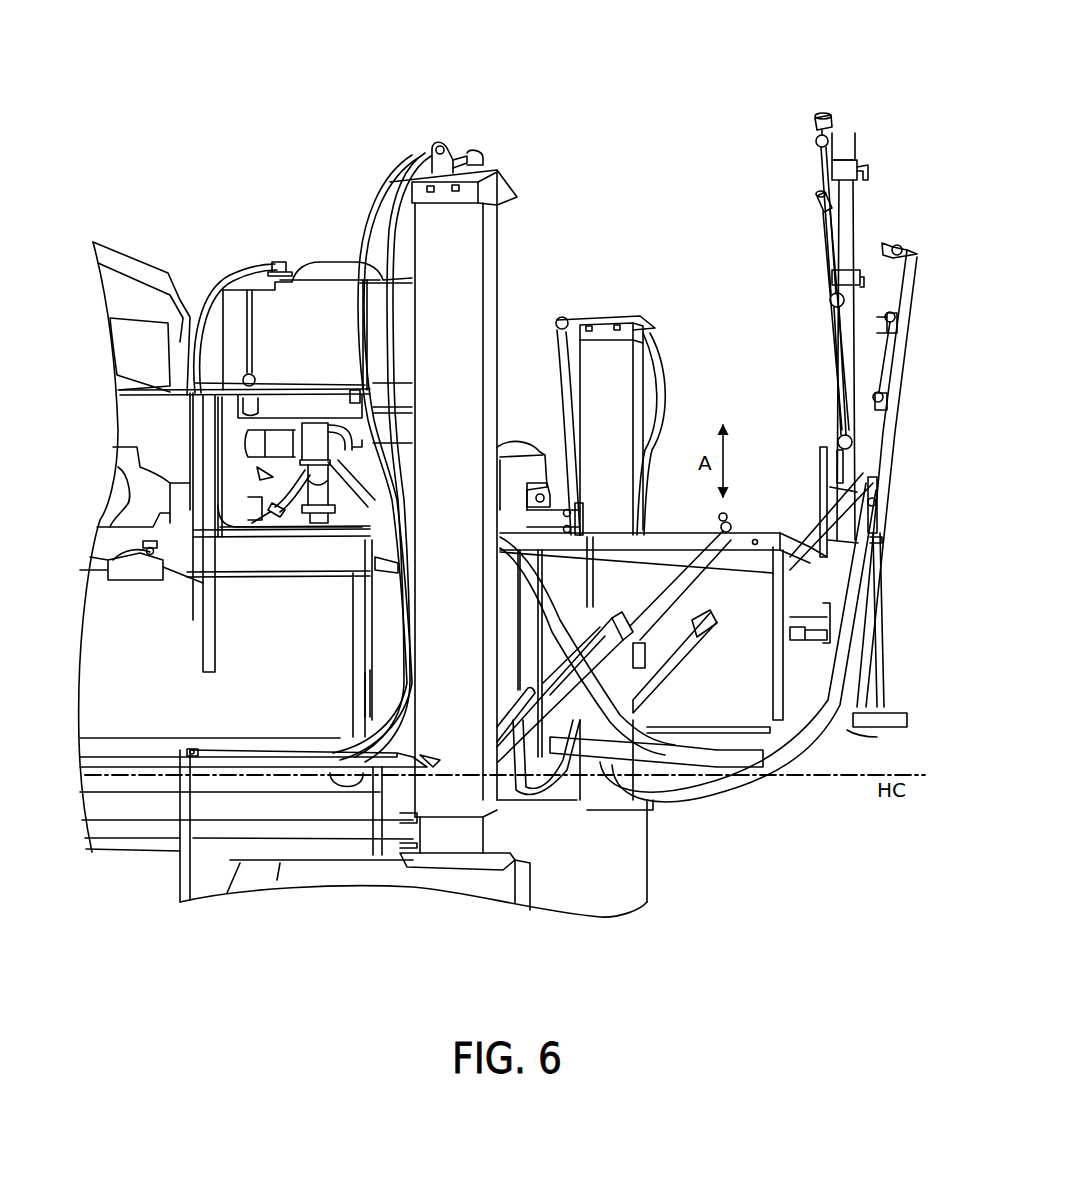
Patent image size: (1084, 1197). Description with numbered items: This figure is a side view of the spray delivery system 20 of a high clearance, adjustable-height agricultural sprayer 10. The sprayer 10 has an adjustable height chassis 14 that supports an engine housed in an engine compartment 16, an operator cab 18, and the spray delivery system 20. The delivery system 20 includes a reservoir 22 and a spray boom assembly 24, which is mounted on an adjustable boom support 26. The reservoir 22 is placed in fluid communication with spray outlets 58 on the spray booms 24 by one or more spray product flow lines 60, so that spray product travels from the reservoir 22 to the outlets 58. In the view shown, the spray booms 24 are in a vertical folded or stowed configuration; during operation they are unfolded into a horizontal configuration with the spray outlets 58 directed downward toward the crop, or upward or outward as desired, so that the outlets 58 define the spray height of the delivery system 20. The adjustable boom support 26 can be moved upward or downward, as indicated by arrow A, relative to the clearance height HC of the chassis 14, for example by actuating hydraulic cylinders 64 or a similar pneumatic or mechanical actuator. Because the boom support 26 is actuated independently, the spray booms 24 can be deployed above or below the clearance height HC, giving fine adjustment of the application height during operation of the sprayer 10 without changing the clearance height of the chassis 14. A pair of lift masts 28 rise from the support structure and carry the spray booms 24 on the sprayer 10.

The high clearance adjustable-height agricultural sprayer 10 is at (172, 50).
The adjustable height chassis 14 is at (150, 600).
The engine compartment 16 is at (510, 448).
The operator cab 18 is at (120, 262).
The spray delivery system 20 is at (508, 95).
The reservoir 22 is at (333, 268).
The spray boom assembly 24 is at (840, 108).
The adjustable boom support 26 is at (778, 786).
The lift mast 28 is at (426, 245).
The spray outlets 58 is at (831, 297).
The spray product flow lines 60 is at (208, 282).
The hydraulic cylinders 64 is at (645, 633).